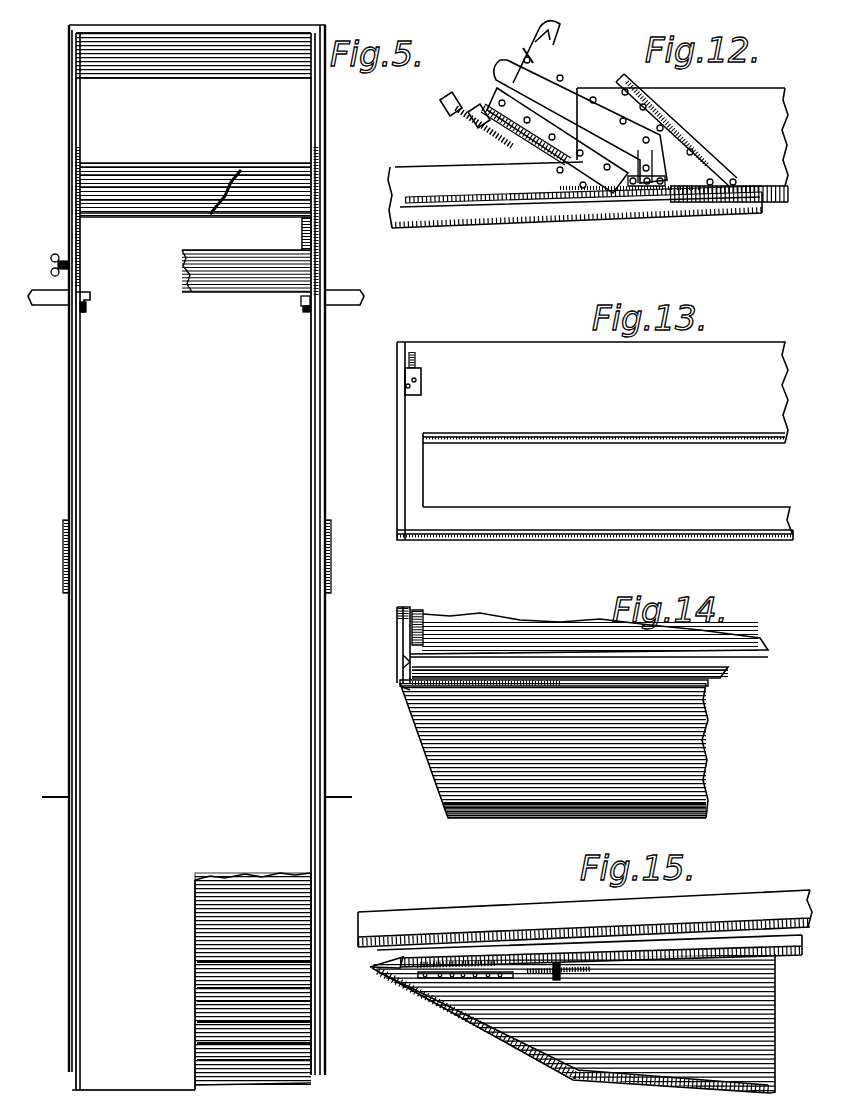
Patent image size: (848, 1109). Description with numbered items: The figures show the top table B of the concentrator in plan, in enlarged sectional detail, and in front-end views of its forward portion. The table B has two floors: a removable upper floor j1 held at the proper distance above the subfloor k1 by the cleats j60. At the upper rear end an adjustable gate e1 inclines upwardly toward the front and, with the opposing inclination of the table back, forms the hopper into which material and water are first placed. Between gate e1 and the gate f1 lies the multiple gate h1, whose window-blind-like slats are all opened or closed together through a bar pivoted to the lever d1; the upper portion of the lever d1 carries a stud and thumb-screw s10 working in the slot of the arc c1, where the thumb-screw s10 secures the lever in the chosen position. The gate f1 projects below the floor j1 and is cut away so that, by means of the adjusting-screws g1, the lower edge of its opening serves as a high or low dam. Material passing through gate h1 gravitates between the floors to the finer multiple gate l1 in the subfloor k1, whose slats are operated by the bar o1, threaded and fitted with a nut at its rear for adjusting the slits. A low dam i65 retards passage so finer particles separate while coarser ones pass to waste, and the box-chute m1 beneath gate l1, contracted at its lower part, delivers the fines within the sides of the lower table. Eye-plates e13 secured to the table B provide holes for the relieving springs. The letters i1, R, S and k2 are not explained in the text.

In FIG. 5, the top panel i1 is at (193, 71).
In FIG. 12, the top panel i1 is at (598, 157).
In FIG. 5, the multiple gate h1 is at (80, 203).
In FIG. 12, the multiple gate h1 is at (665, 200).
In FIG. 5, the adjustable gate e1 is at (295, 201).
In FIG. 12, the adjustable gate e1 is at (630, 80).
In FIG. 5, the gate f1 is at (282, 272).
In FIG. 12, the gate f1 is at (482, 102).
In FIG. 13, the gate f1 is at (593, 545).
In FIG. 5, the stud and thumb-screw s10 is at (57, 262).
In FIG. 12, the stud and thumb-screw s10 is at (525, 55).
In FIG. 5, the rail arm R is at (350, 300).
In FIG. 5, the arc c1 is at (78, 310).
In FIG. 12, the arc c1 is at (558, 30).
In FIG. 5, the adjusting-screws g1 is at (82, 315).
In FIG. 12, the adjusting-screws g1 is at (446, 104).
In FIG. 13, the adjusting-screws g1 is at (405, 392).
In FIG. 5, the upper floor j1 is at (193, 584).
In FIG. 12, the upper floor j1 is at (455, 195).
In FIG. 14, the upper floor j1 is at (470, 650).
In FIG. 15, the upper floor j1 is at (410, 966).
In FIG. 5, the top table B is at (190, 416).
In FIG. 5, the eye-plates e13 is at (66, 553).
In FIG. 5, the support arm S is at (191, 807).
In FIG. 5, the subfloor k1 is at (290, 918).
In FIG. 12, the subfloor k1 is at (465, 222).
In FIG. 14, the subfloor k1 is at (405, 676).
In FIG. 5, the multiple gate l1 is at (305, 1010).
In FIG. 15, the multiple gate l1 is at (488, 965).
In FIG. 5, the low dam i65 is at (272, 1058).
In FIG. 14, the low dam i65 is at (404, 688).
In FIG. 15, the low dam i65 is at (372, 966).
In FIG. 12, the lever d1 is at (548, 70).
In FIG. 12, the hinge k2 is at (654, 190).
In FIG. 14, the cleats j60 is at (410, 660).
In FIG. 15, the cleats j60 is at (628, 947).
In FIG. 14, the box-chute m1 is at (695, 760).
In FIG. 15, the box-chute m1 is at (573, 1024).
In FIG. 15, the bar o1 is at (450, 980).